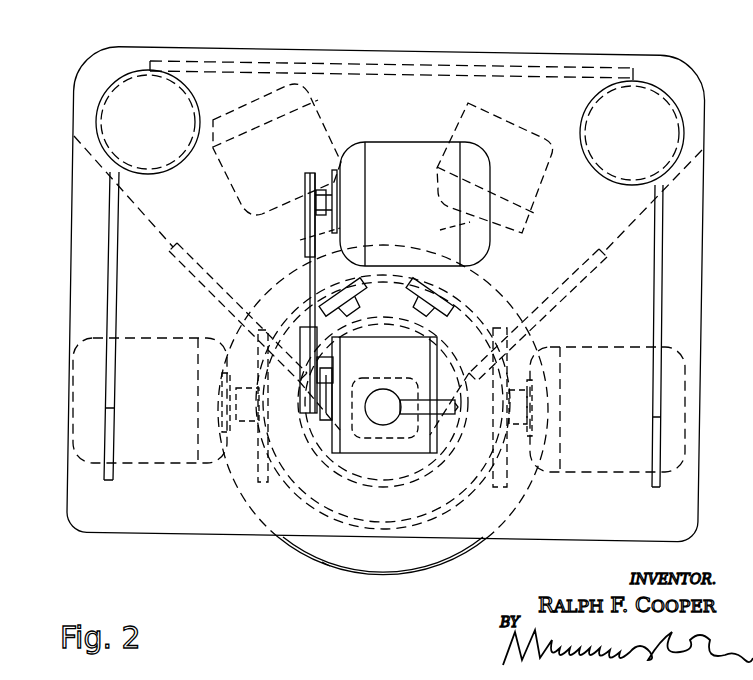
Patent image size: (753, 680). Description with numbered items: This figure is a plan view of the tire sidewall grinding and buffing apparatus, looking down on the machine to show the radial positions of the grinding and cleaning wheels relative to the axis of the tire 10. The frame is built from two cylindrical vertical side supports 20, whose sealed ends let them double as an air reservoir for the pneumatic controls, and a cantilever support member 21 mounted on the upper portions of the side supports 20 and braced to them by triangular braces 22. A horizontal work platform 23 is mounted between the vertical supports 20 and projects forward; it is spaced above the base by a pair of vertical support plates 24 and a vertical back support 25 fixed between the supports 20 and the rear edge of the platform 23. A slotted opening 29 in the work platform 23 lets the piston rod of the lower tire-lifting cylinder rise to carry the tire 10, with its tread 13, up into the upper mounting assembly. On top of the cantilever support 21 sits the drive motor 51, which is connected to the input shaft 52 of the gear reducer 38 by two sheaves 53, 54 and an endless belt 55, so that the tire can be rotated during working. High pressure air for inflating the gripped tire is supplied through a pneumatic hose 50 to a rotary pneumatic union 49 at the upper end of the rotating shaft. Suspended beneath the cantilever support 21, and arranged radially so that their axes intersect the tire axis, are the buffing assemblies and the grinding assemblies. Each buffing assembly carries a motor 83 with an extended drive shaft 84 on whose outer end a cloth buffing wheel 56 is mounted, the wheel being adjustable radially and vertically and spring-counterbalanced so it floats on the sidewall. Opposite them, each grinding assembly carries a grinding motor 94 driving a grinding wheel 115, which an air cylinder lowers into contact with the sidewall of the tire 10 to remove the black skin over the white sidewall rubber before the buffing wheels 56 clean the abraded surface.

The vulcanized tire 10 is at (330, 572).
The tread 13 is at (388, 573).
The vertical side supports 20 is at (116, 82).
The cantilever support member 21 is at (148, 525).
The triangular braces 22 is at (108, 216).
The horizontal work platform 23 is at (188, 275).
The vertical support plates 24 is at (185, 250).
The vertical back support 25 is at (290, 46).
The slotted opening 29 is at (392, 448).
The gear reducer 38 is at (345, 447).
The rotary pneumatic union 49 is at (380, 392).
The pneumatic hose 50 is at (425, 400).
The drive motor 51 is at (376, 148).
The input shaft 52 is at (332, 372).
The sheave 53 is at (305, 186).
The sheave 54 is at (304, 332).
The endless belt 55 is at (308, 262).
The cloth buffing wheel 56 is at (325, 300).
The motor 83 is at (328, 120).
The extended drive shaft 84 is at (300, 240).
The grinding motor 94 is at (168, 470).
The grinding wheel 115 is at (264, 490).